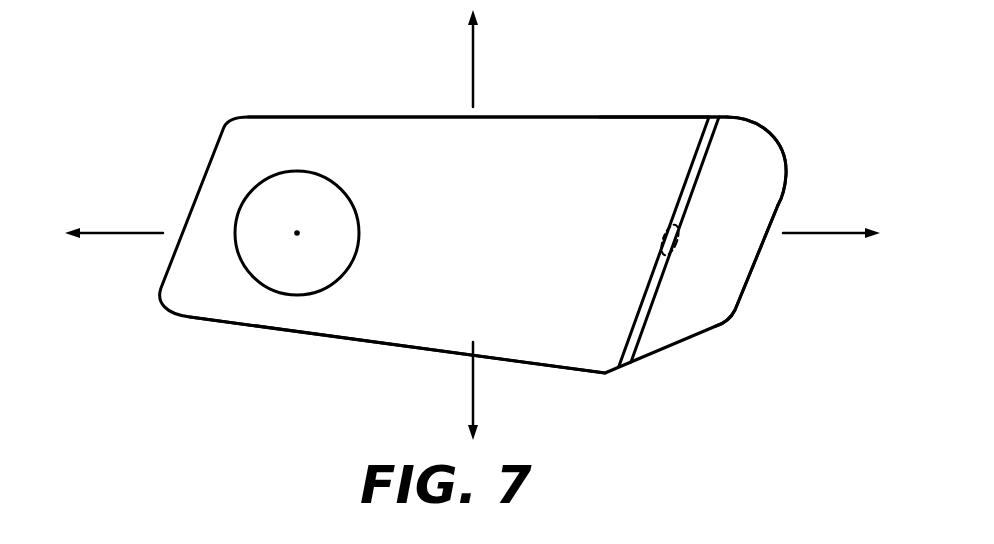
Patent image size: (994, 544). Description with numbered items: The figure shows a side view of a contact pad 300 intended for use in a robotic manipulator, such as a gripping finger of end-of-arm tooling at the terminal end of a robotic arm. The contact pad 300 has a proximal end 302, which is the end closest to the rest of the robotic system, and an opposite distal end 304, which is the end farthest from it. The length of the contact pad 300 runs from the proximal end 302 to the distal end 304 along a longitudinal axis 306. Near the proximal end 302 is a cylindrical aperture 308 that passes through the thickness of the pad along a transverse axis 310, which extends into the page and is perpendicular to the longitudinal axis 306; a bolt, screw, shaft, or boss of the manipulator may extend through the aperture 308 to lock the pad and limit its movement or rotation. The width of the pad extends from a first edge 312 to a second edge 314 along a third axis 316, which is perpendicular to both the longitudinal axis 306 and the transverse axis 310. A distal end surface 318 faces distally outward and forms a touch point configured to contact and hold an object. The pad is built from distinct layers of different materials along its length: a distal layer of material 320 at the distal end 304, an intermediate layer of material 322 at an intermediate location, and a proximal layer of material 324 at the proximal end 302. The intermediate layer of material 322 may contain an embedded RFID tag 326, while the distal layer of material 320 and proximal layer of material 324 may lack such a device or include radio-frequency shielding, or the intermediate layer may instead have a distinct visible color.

The contact pad 300 is at (135, 70).
The proximal end 302 is at (128, 285).
The distal end 304 is at (825, 184).
The longitudinal axis 306 is at (118, 232).
The aperture 308 is at (312, 277).
The transverse axis 310 is at (297, 231).
The first edge 312 is at (534, 116).
The second edge 314 is at (270, 330).
The third axis 316 is at (470, 62).
The distal end surface 318 is at (743, 292).
The distal layer of material 320 is at (757, 148).
The intermediate layer of material 322 is at (715, 117).
The proximal layer of material 324 is at (617, 137).
The RFID tag 326 is at (676, 257).